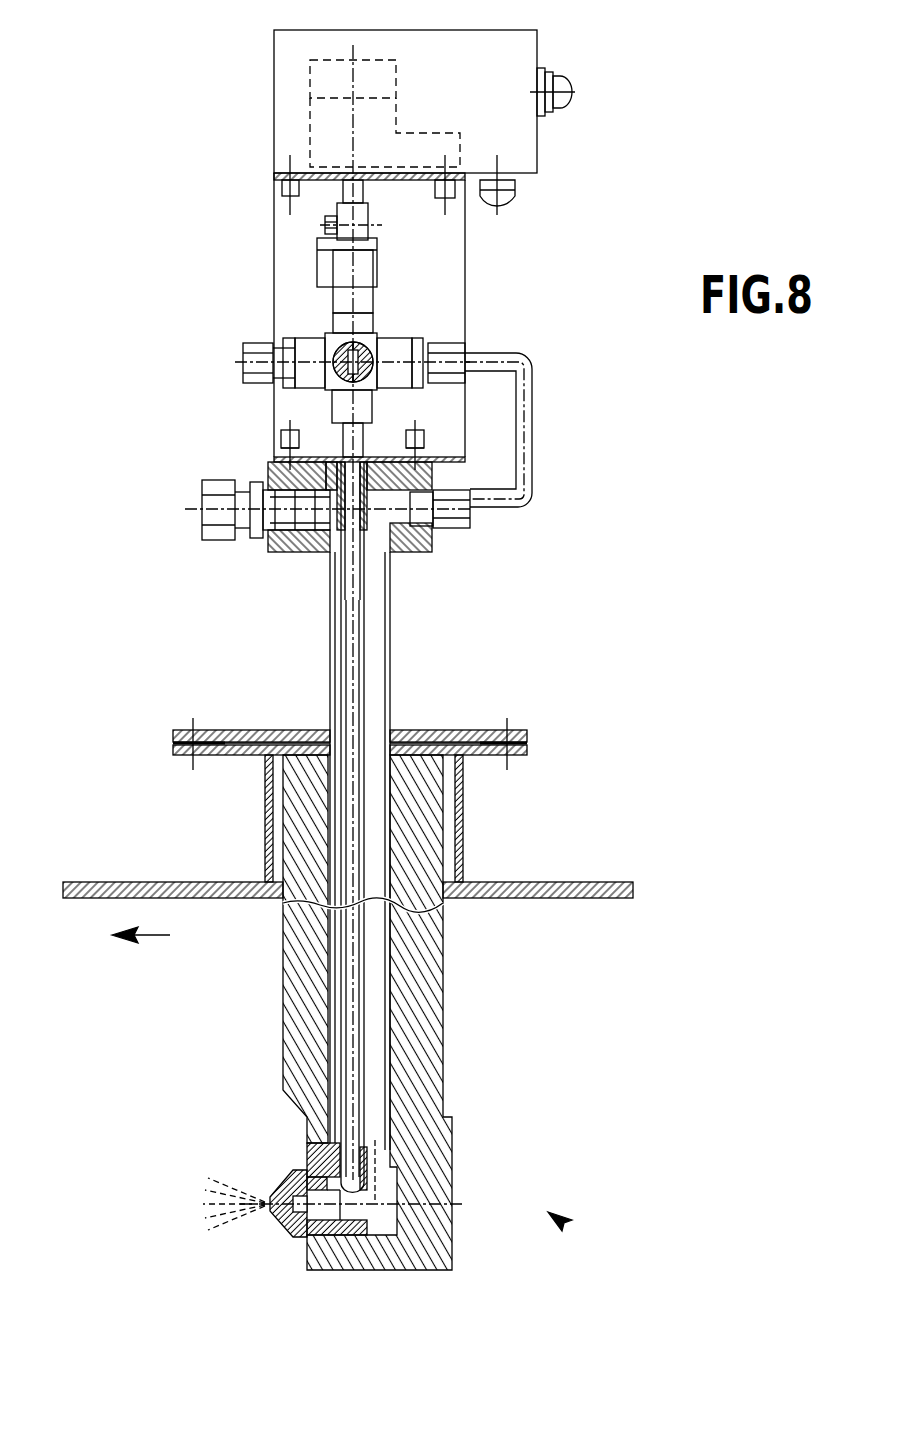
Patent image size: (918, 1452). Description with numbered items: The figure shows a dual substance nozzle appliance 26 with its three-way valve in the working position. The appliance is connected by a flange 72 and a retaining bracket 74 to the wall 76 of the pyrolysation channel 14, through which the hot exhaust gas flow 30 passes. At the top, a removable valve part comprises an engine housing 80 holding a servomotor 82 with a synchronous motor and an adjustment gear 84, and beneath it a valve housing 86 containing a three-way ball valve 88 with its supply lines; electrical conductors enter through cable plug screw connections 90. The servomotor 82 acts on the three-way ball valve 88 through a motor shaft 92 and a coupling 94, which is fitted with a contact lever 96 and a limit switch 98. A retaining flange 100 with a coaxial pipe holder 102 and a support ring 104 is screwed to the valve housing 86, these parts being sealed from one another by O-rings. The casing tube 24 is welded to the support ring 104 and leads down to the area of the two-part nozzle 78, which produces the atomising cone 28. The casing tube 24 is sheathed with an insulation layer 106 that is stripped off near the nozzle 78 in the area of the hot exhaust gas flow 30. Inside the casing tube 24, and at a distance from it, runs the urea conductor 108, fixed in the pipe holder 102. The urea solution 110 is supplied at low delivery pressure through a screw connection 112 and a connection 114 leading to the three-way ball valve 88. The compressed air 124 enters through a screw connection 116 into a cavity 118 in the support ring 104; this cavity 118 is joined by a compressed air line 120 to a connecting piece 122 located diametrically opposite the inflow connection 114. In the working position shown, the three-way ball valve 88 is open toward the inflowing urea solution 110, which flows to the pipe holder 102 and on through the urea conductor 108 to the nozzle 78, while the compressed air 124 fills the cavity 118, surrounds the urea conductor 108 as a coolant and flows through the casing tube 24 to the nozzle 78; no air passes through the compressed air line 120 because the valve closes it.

The pyrolysation channel 14 is at (98, 1047).
The casing tube 24 is at (393, 583).
The dual substance nozzle appliance 26 is at (560, 1222).
The atomising cone 28 is at (195, 1205).
The hot exhaust gas flow 30 is at (157, 935).
The flange 72 is at (175, 735).
The retaining bracket 74 is at (265, 850).
The wall 76 is at (540, 897).
The nozzle 78 is at (270, 1225).
The engine housing 80 is at (517, 52).
The servomotor 82 is at (325, 77).
The adjustment gear 84 is at (327, 143).
The valve housing 86 is at (449, 293).
The three-way ball valve 88 is at (487, 345).
The cable plug screw connections 90 is at (563, 108).
The motor shaft 92 is at (348, 197).
The coupling 94 is at (340, 280).
The contact lever 96 is at (374, 250).
The limit switch 98 is at (340, 212).
The retaining flange 100 is at (330, 455).
The pipe holder 102 is at (266, 480).
The support ring 104 is at (432, 540).
The insulation layer 106 is at (423, 830).
The urea conductor 108 is at (342, 652).
The urea solution 110 is at (233, 362).
The screw connection 112 is at (243, 348).
The connection 114 is at (216, 324).
The screw connection 116 is at (202, 530).
The cavity 118 is at (268, 545).
The compressed air line 120 is at (532, 440).
The connecting piece 122 is at (490, 418).
The compressed air 124 is at (187, 509).